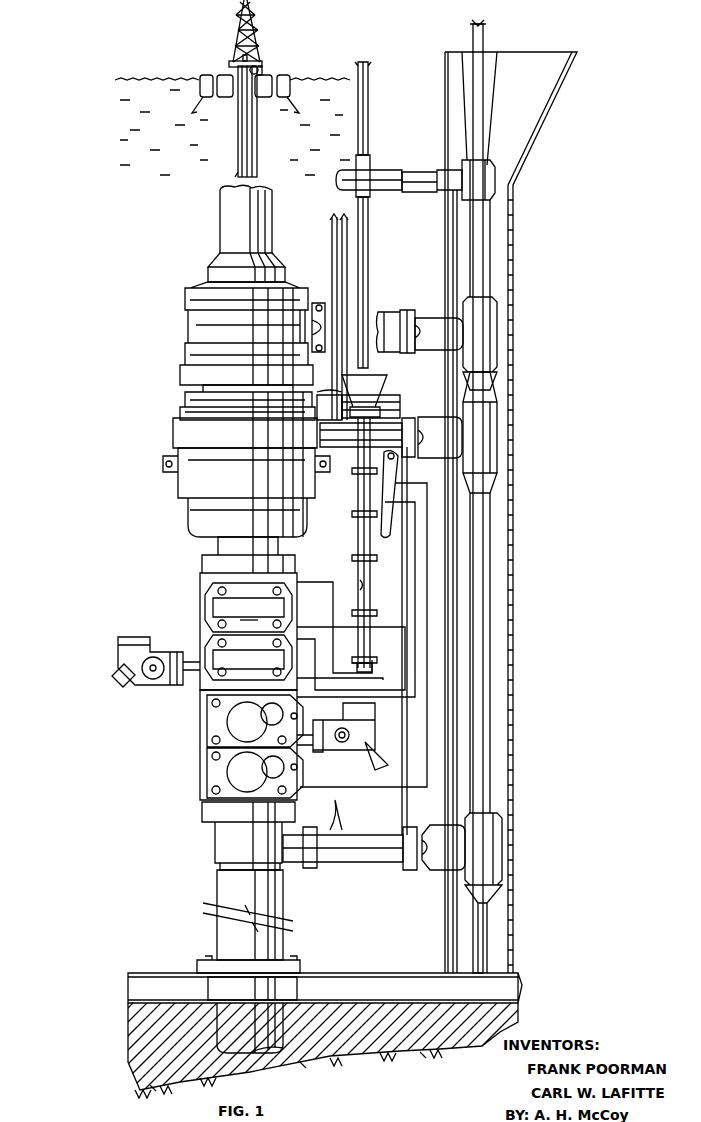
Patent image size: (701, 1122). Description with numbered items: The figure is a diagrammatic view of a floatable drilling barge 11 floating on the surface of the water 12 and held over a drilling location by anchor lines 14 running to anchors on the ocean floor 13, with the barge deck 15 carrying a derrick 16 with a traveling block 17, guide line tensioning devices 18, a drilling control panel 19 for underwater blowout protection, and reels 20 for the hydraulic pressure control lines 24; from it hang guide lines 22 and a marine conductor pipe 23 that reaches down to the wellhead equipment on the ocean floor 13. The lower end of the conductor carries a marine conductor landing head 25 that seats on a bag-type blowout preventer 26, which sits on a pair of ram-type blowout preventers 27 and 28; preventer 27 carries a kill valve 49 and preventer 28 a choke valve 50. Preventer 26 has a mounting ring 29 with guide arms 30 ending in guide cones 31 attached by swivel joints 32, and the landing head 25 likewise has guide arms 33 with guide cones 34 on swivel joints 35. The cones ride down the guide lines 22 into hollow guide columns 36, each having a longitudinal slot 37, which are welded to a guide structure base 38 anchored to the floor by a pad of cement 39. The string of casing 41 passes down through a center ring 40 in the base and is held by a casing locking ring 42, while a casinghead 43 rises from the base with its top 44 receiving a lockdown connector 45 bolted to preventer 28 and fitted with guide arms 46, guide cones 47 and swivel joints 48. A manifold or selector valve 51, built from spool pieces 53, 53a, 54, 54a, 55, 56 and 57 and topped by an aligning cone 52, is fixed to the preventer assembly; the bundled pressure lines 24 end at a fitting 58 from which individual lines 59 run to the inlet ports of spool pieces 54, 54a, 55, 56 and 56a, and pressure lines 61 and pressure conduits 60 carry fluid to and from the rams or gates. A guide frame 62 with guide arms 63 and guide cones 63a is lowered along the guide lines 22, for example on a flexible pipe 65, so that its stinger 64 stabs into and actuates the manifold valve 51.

The drilling barge 11 is at (282, 76).
The surface of the water 12 is at (312, 80).
The ocean floor 13 is at (358, 1062).
The anchor lines 14 is at (192, 108).
The floating platform 15 is at (230, 60).
The derrick 16 is at (249, 12).
The traveling block 17 is at (256, 50).
The guide line tensioning devices 18 is at (222, 76).
The drilling control panel 19 is at (258, 66).
The reels 20 is at (262, 72).
The guide lines 22 is at (238, 120).
The marine conductor pipe 23 is at (242, 149).
The hydraulic pressure control lines 24 is at (257, 149).
The marine conductor landing head 25 is at (190, 325).
The bag-type blowout preventer 26 is at (182, 486).
The ram-type blowout preventer 27 is at (203, 615).
The ram-type blowout preventer 28 is at (203, 733).
The mounting ring 29 is at (178, 436).
The guide arms 30 is at (394, 443).
The guide cones 31 is at (489, 447).
The swivel joints 32 is at (426, 438).
The guide arms 33 is at (399, 341).
The guide cones 34 is at (489, 341).
The swivel joints 35 is at (422, 330).
The hollow guide column 36 is at (513, 605).
The longitudinal slot 37 is at (459, 760).
The guide structure base 38 is at (340, 972).
The pad of cement 39 is at (338, 1039).
The center ring 40 is at (208, 990).
The casing 41 is at (220, 1028).
The casing locking ring 42 is at (200, 967).
The casinghead 43 is at (218, 923).
The top of the casinghead 44 is at (218, 882).
The lockdown connector 45 is at (218, 836).
The guide arms 46 is at (340, 863).
The guide cones 47 is at (490, 861).
The swivel joints 48 is at (432, 846).
The kill valve 49 is at (170, 685).
The choke valve 50 is at (320, 752).
The manifold or selector valve 51 is at (402, 535).
The pipe guide or aligning cone 52 is at (374, 394).
The spool piece 53 is at (375, 412).
The rod section 53a is at (356, 580).
The spool piece 54 is at (355, 472).
The spool piece 54a is at (356, 520).
The spool piece 55 is at (354, 560).
The spool piece 56 is at (354, 595).
The spool piece 56a is at (282, 618).
The spool piece 57 is at (356, 667).
The fitting 58 is at (320, 415).
The individual lines 59 is at (345, 435).
The pressure conduits 60 is at (390, 660).
The pressure lines 61 is at (422, 550).
The guide frame 62 is at (372, 170).
The guide arms 63 is at (430, 193).
The guide cones 63a is at (488, 160).
The stinger 64 is at (368, 235).
The flexible pipe 65 is at (368, 107).